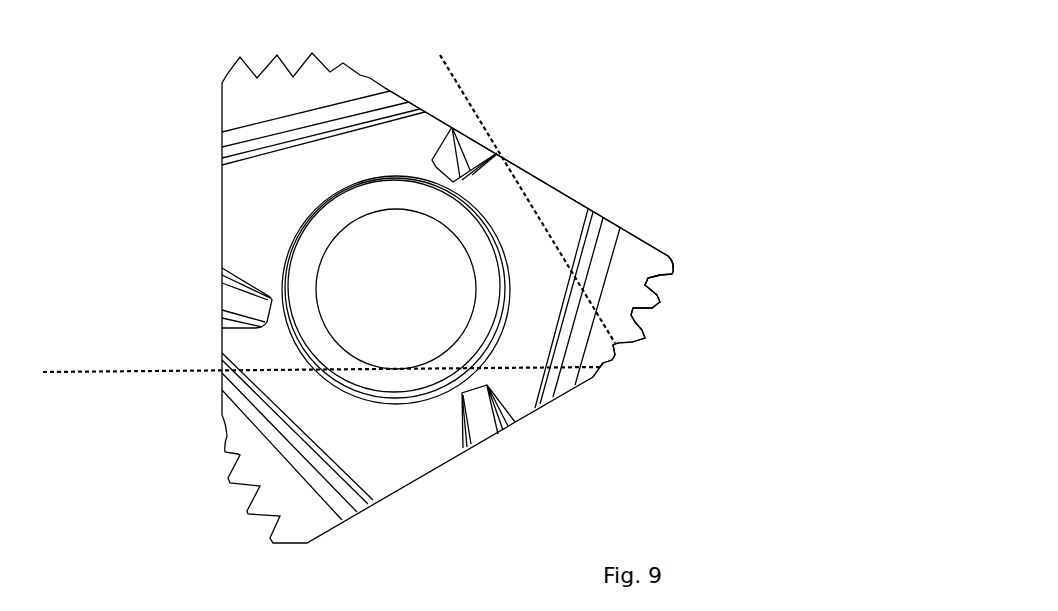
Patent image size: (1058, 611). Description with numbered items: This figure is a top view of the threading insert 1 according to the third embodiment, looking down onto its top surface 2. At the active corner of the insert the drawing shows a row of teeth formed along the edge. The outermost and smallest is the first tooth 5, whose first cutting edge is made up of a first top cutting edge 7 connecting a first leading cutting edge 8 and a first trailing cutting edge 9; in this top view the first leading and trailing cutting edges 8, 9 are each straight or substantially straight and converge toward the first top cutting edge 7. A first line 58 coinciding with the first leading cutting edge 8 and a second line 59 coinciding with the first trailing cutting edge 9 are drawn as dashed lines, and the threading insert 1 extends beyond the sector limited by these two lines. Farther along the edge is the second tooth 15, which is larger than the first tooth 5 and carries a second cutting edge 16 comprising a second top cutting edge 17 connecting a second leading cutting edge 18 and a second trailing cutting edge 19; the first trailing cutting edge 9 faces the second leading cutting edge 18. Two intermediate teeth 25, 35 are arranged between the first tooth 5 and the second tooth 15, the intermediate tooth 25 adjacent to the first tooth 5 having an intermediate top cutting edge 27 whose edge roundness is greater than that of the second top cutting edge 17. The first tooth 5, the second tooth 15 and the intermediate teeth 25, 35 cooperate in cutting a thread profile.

The threading insert 1 is at (560, 118).
The top surface 2 is at (265, 220).
The first tooth 5 is at (735, 410).
The first top cutting edge 7 is at (618, 358).
The first leading cutting edge 8 is at (602, 368).
The first trailing cutting edge 9 is at (618, 356).
The second tooth 15 is at (798, 303).
The second cutting edge 16 is at (673, 267).
The second top cutting edge 17 is at (675, 271).
The second leading cutting edge 18 is at (660, 277).
The second trailing cutting edge 19 is at (673, 266).
The intermediate tooth 25 is at (743, 373).
The intermediate top cutting edge 27 is at (643, 338).
The intermediate tooth 35 is at (763, 338).
The first line 58 is at (321, 352).
The second line 59 is at (514, 178).